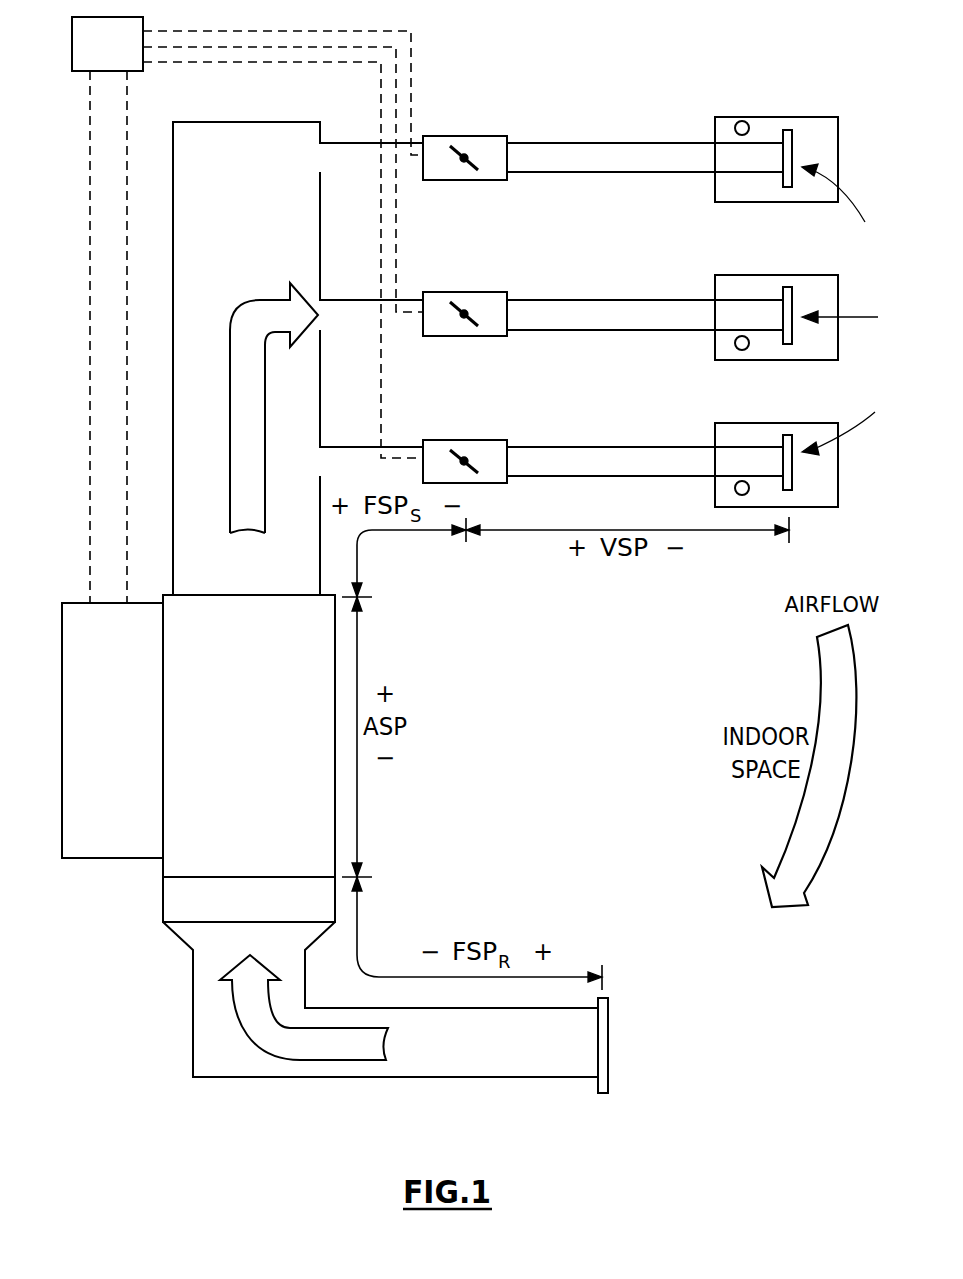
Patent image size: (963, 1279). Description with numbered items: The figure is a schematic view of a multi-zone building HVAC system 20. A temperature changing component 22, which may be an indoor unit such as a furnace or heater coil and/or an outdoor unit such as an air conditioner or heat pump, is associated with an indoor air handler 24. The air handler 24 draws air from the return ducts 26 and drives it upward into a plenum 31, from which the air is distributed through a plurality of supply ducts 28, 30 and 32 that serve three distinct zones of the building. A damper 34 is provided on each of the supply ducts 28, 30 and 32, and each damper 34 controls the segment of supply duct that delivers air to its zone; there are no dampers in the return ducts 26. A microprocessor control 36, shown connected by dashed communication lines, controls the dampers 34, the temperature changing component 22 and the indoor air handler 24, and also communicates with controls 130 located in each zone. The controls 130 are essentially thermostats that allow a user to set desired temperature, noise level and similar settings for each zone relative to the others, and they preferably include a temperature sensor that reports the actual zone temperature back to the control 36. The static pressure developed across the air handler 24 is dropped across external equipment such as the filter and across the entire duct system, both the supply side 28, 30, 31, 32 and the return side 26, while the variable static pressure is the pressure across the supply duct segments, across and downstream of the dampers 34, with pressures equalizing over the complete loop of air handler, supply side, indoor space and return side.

The multi-zone HVAC system 20 is at (60, 538).
The temperature changing component 22 is at (82, 658).
The indoor air handler 24 is at (177, 763).
The return ducts 26 is at (193, 1040).
The supply duct 28 is at (353, 152).
The supply duct 30 is at (333, 310).
The plenum 31 is at (264, 227).
The supply duct 32 is at (352, 460).
The damper 34 is at (487, 145).
The microprocessor control 36 is at (78, 46).
The control 130 is at (735, 128).